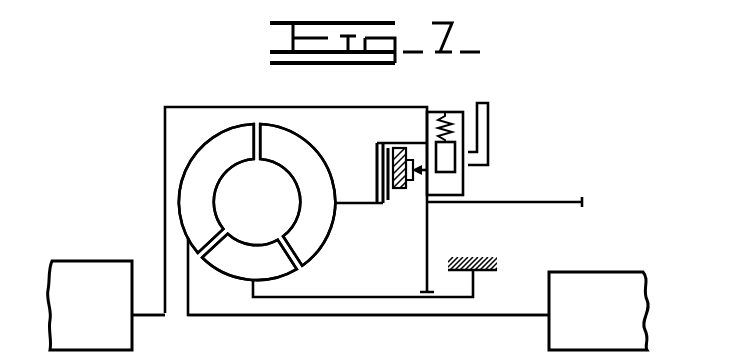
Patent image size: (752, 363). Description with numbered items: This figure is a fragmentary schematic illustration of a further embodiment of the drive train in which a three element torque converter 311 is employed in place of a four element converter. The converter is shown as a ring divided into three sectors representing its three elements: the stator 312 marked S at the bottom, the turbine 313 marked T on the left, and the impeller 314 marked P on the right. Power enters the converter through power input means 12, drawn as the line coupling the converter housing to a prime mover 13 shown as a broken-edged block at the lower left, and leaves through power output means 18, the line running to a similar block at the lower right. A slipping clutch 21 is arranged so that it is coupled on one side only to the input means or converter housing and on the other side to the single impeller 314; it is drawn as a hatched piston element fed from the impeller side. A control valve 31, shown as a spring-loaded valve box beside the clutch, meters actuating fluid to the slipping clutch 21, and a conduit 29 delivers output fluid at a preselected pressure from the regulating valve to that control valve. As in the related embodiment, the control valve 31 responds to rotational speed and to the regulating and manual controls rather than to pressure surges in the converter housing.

The three element torque converter 311 is at (224, 124).
The stator 312 is at (249, 276).
The turbine 313 is at (183, 195).
The impeller 314 is at (300, 150).
The prime mover 13 is at (68, 270).
The power input means 12 is at (157, 316).
The power output means 18 is at (275, 316).
The slipping clutch 21 is at (370, 177).
The control valve 31 is at (445, 112).
The conduit 29 is at (488, 128).